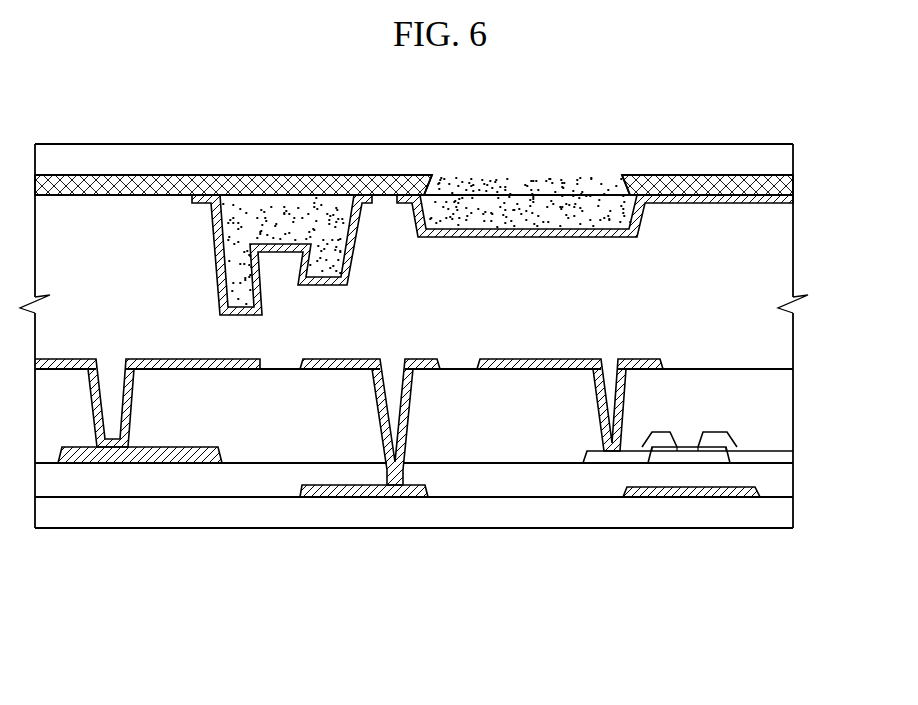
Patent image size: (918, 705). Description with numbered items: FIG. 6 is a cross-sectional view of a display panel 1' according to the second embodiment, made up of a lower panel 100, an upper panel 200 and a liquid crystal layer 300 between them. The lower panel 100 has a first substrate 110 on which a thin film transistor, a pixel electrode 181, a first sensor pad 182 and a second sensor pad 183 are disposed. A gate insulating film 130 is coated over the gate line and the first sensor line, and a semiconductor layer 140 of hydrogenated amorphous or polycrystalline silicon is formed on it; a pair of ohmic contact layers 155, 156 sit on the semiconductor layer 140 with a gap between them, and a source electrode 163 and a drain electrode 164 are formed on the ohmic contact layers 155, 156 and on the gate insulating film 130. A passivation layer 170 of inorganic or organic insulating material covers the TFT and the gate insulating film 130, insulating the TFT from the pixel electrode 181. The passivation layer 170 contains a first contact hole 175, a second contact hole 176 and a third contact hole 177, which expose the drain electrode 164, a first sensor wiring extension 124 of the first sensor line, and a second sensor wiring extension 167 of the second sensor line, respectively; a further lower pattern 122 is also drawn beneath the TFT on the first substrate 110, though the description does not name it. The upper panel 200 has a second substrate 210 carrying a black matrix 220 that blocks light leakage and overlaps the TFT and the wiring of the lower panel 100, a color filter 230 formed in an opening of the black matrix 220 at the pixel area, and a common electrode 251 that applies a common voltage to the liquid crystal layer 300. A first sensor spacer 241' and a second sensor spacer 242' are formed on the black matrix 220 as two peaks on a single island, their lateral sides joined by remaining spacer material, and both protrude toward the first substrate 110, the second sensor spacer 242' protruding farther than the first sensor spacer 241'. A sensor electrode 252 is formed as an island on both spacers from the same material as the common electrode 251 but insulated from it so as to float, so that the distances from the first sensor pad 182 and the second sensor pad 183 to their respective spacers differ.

The display panel 1' is at (414, 603).
The lower panel 100 is at (817, 372).
The first substrate 110 is at (266, 508).
The first lower pattern 122 is at (650, 490).
The first sensor wiring extension 124 is at (358, 492).
The gate insulating film 130 is at (214, 482).
The semiconductor layer 140 is at (703, 455).
The ohmic contact layer 155 is at (720, 450).
The ohmic contact layer 156 is at (648, 450).
The source electrode 163 is at (718, 438).
The drain electrode 164 is at (660, 438).
The second sensor wiring extension 167 is at (130, 467).
The passivation layer 170 is at (447, 442).
The first contact hole 175 is at (614, 344).
The second contact hole 176 is at (391, 344).
The third contact hole 177 is at (112, 346).
The pixel electrode 181 is at (524, 372).
The first sensor pad 182 is at (327, 372).
The second sensor pad 183 is at (62, 372).
The upper panel 200 is at (817, 145).
The second substrate 210 is at (180, 162).
The black matrix 220 is at (118, 176).
The color filter 230 is at (488, 190).
The first sensor spacer 241' is at (319, 185).
The second sensor spacer 242' is at (254, 201).
The common electrode 251 is at (547, 225).
The sensor electrode 252 is at (366, 180).
The liquid crystal layer 300 is at (817, 218).